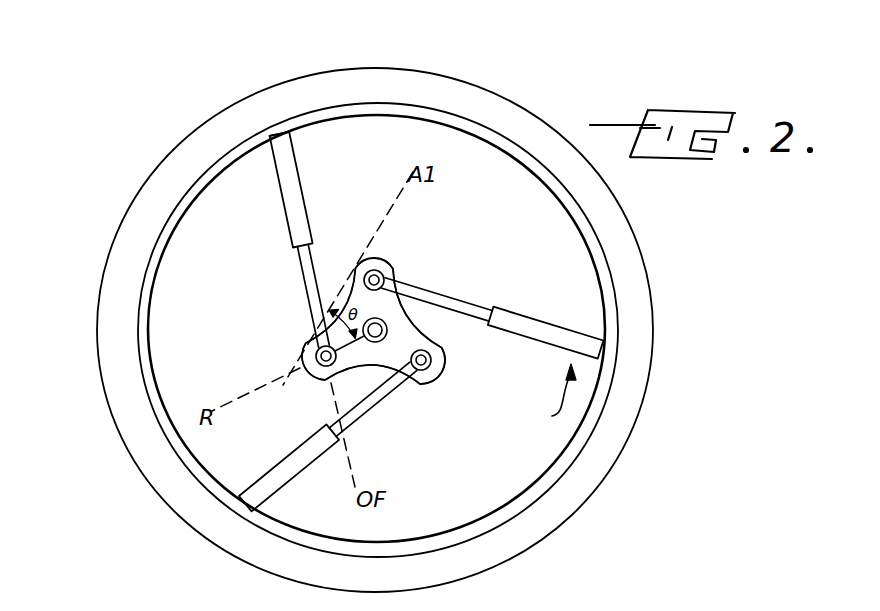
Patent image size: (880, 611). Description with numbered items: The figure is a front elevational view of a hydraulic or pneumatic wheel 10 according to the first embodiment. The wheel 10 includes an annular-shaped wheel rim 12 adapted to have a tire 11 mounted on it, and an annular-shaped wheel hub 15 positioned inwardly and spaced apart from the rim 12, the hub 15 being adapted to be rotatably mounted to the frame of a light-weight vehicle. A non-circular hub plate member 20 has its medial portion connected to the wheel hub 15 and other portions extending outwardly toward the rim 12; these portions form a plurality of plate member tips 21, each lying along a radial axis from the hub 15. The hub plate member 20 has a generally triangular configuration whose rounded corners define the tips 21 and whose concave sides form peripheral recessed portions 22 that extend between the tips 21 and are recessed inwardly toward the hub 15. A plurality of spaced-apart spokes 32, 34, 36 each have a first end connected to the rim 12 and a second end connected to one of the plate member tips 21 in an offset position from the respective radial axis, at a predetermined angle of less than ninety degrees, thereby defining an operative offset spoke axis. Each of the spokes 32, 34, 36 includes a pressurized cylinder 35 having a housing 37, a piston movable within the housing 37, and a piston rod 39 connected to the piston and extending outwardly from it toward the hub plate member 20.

The wheel 10 is at (127, 70).
The tire 11 is at (461, 84).
The wheel rim 12 is at (530, 160).
The wheel hub 15 is at (412, 318).
The hub plate member 20 is at (393, 371).
The plate member tips 21 is at (391, 263).
The peripheral recessed portions 22 is at (341, 283).
The spoke 32 is at (262, 476).
The spoke 34 is at (576, 272).
The pressurized cylinder 35 is at (549, 396).
The spoke 36 is at (283, 205).
The housing 37 is at (297, 157).
The piston rod 39 is at (300, 268).